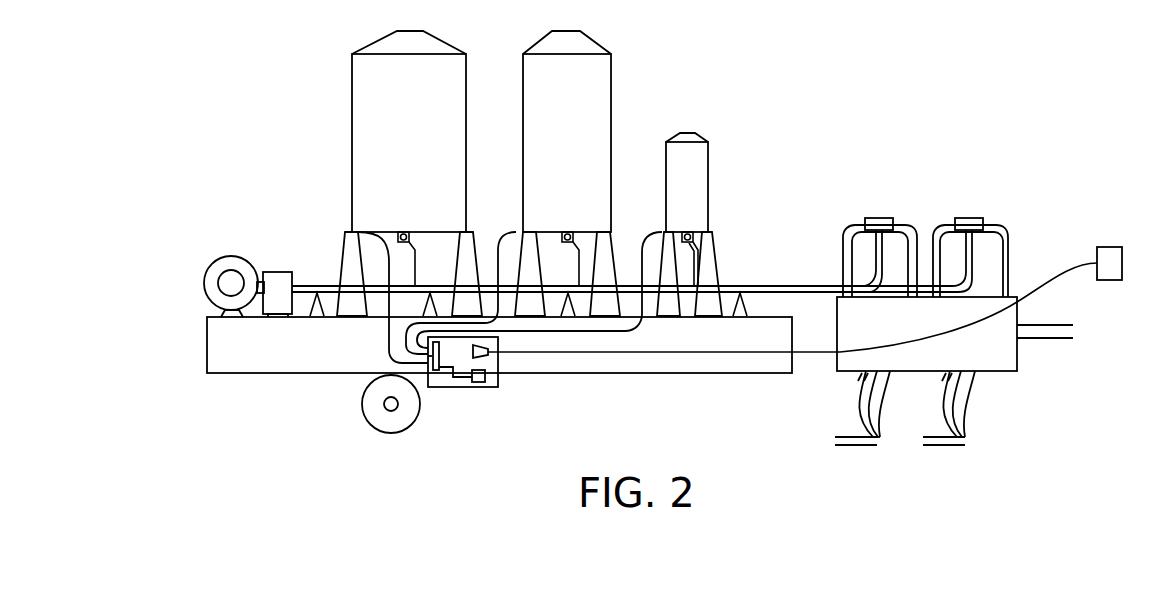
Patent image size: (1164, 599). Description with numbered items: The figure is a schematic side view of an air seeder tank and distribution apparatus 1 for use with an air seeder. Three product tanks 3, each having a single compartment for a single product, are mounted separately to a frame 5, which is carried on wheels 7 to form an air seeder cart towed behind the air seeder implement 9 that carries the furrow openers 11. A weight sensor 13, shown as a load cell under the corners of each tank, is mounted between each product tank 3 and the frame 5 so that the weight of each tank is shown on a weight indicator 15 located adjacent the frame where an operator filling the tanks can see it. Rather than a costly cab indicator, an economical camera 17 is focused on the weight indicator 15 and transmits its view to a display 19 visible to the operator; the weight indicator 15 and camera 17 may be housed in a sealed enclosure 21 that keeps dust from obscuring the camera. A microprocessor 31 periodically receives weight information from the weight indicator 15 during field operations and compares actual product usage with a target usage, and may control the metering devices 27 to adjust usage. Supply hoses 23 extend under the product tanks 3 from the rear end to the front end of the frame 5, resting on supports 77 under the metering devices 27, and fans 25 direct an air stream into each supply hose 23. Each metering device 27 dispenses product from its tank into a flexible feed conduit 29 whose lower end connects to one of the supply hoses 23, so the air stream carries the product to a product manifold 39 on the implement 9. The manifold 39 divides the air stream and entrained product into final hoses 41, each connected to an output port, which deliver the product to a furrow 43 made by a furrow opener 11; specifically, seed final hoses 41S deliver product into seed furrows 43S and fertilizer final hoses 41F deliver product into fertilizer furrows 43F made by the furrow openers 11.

The air seeder tank and distribution apparatus 1 is at (243, 122).
The product tank 3 is at (352, 84).
The frame 5 is at (228, 373).
The wheels 7 is at (362, 403).
The air seeder implement 9 is at (1018, 362).
The furrow opener 11 is at (965, 428).
The weight sensor 13 is at (345, 231).
The weight indicator 15 is at (519, 390).
The camera 17 is at (498, 378).
The display 19 is at (1112, 247).
The sealed enclosure 21 is at (498, 358).
The supply hose 23 is at (755, 287).
The fan 25 is at (214, 263).
The metering device 27 is at (398, 234).
The flexible feed conduit 29 is at (418, 258).
The microprocessor 31 is at (493, 389).
The product manifold 39 is at (968, 218).
The final hose 41 is at (1003, 226).
The seed final hose 41S is at (858, 397).
The fertilizer final hose 41F is at (947, 400).
The furrow 43 is at (940, 447).
The seed furrow 43S is at (858, 447).
The fertilizer furrow 43F is at (950, 447).
The support 77 is at (308, 305).